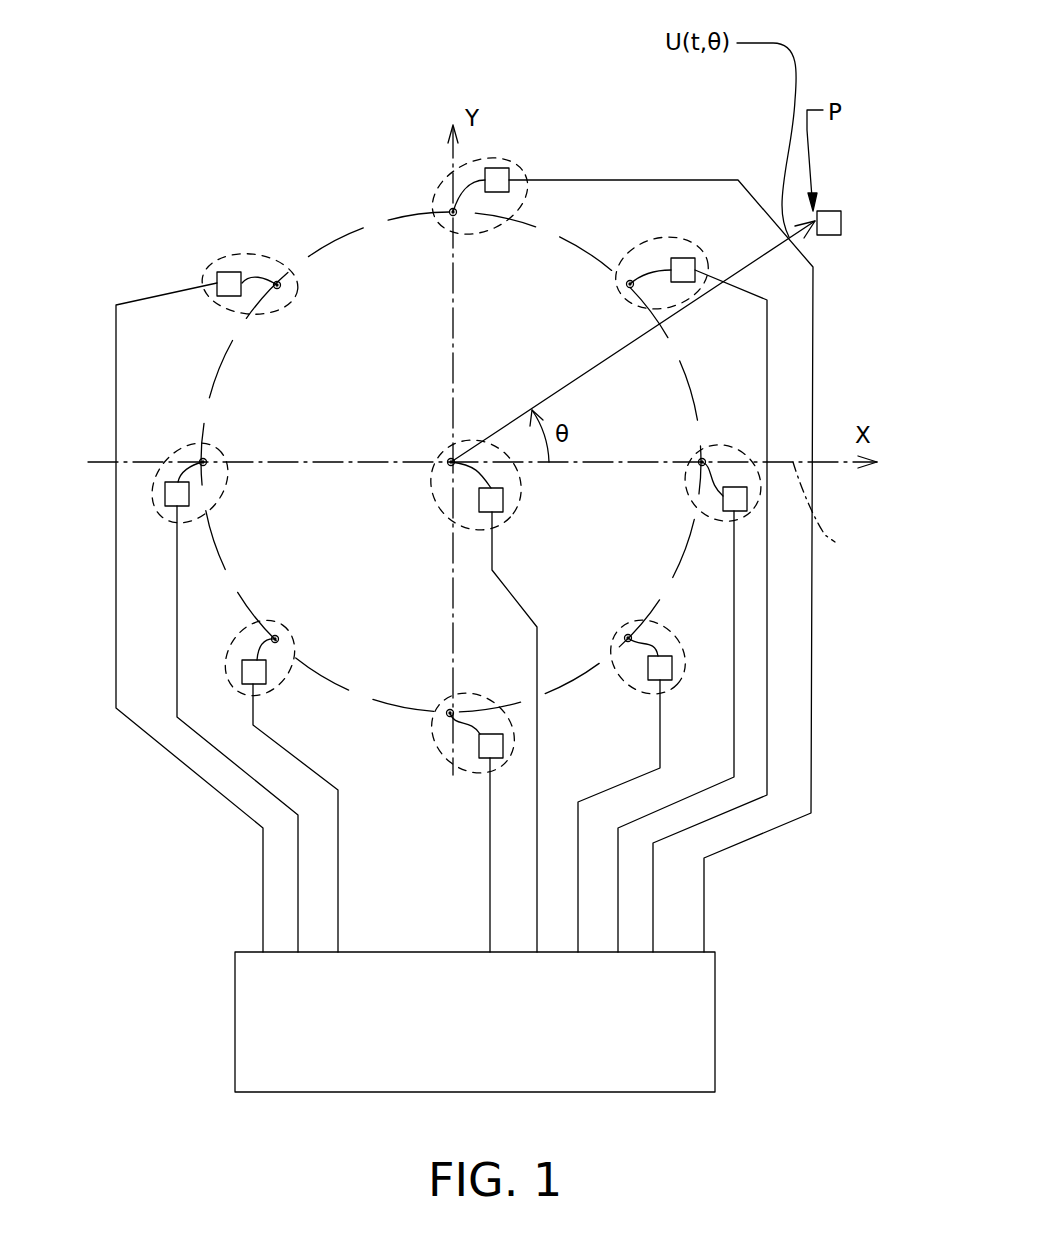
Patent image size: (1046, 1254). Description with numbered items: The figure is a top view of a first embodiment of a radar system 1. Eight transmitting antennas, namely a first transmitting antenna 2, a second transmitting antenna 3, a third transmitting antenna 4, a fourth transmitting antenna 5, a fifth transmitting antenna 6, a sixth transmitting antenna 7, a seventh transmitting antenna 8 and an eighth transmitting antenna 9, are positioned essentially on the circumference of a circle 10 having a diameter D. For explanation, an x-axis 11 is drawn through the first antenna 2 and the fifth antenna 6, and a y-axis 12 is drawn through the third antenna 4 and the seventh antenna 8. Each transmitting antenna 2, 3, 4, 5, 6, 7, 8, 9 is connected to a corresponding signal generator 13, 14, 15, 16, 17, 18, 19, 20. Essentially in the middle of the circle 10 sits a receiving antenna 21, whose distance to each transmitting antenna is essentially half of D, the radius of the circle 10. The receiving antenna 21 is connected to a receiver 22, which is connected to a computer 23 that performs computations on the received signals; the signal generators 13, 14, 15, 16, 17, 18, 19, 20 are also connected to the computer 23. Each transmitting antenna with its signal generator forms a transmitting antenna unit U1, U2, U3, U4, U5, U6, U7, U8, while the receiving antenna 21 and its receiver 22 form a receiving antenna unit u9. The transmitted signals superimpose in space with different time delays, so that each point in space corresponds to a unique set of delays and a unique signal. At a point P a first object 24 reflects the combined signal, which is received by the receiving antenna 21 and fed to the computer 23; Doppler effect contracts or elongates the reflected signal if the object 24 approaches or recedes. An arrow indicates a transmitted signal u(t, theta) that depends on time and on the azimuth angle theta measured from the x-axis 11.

The radar system 1 is at (248, 103).
The first transmitting antenna 2 is at (702, 462).
The second transmitting antenna 3 is at (630, 284).
The third transmitting antenna 4 is at (453, 211).
The fourth transmitting antenna 5 is at (277, 285).
The fifth transmitting antenna 6 is at (203, 462).
The sixth transmitting antenna 7 is at (275, 639).
The seventh transmitting antenna 8 is at (450, 713).
The eighth transmitting antenna 9 is at (628, 638).
The circle 10 is at (352, 232).
The x-axis 11 is at (835, 542).
The y-axis 12 is at (425, 148).
The signal generator 13 is at (735, 498).
The signal generator 14 is at (680, 260).
The signal generator 15 is at (497, 168).
The signal generator 16 is at (232, 284).
The signal generator 17 is at (180, 493).
The signal generator 18 is at (253, 672).
The signal generator 19 is at (485, 747).
The signal generator 20 is at (672, 668).
The receiving antenna 21 is at (451, 462).
The receiver 22 is at (490, 502).
The computer 23 is at (250, 983).
The first object 24 is at (830, 235).
The transmitting antenna unit U1 is at (747, 523).
The transmitting antenna unit U2 is at (680, 245).
The transmitting antenna unit U3 is at (513, 152).
The transmitting antenna unit U4 is at (227, 254).
The transmitting antenna unit U5 is at (180, 441).
The transmitting antenna unit U6 is at (235, 653).
The transmitting antenna unit U7 is at (567, 778).
The transmitting antenna unit U8 is at (683, 687).
The receiving antenna unit u9 is at (467, 441).